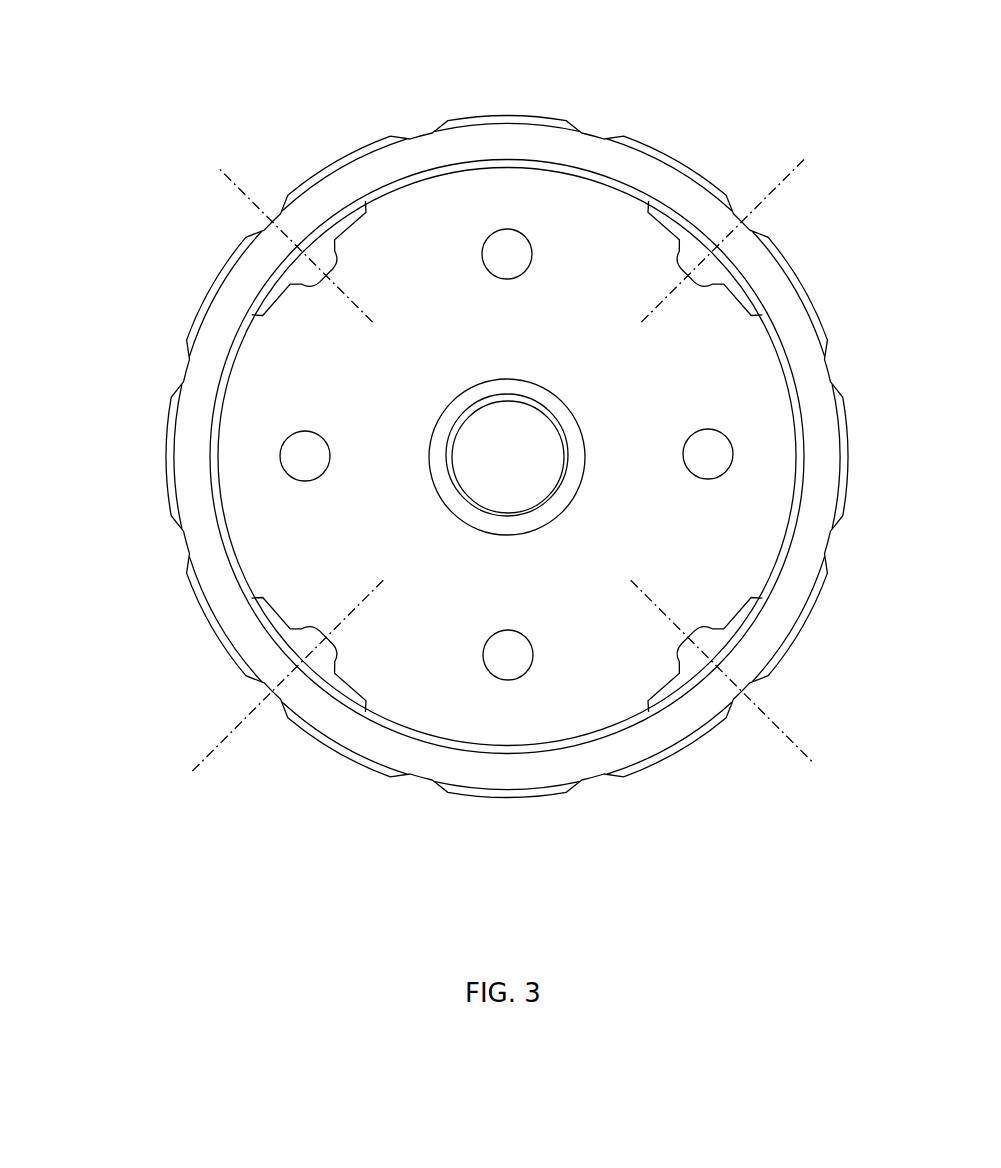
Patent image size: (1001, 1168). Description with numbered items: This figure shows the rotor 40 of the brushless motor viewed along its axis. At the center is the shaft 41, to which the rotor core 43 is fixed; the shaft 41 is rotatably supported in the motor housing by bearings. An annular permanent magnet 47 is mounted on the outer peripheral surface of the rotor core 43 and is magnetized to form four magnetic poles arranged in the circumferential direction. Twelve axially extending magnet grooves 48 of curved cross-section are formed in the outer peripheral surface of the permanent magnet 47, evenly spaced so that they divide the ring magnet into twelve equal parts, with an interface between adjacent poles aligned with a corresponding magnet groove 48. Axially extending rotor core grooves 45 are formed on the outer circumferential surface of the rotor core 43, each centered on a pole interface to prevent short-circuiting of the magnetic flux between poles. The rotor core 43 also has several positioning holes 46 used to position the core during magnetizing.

The rotor 40 is at (478, 404).
The shaft 41 is at (510, 454).
The rotor core 43 is at (673, 381).
The rotor core groove 45 is at (678, 267).
The positioning hole 46 is at (297, 460).
The permanent magnet 47 is at (820, 455).
The magnet groove 48 is at (823, 540).